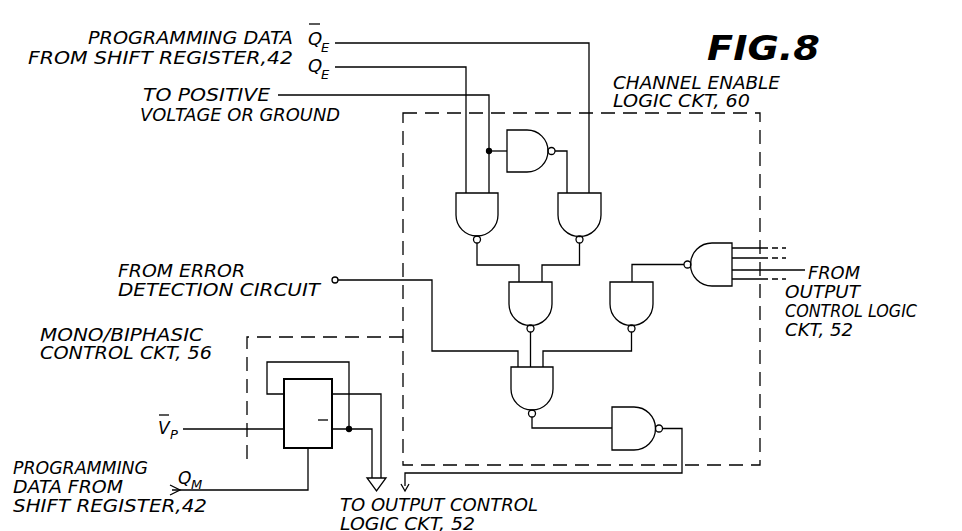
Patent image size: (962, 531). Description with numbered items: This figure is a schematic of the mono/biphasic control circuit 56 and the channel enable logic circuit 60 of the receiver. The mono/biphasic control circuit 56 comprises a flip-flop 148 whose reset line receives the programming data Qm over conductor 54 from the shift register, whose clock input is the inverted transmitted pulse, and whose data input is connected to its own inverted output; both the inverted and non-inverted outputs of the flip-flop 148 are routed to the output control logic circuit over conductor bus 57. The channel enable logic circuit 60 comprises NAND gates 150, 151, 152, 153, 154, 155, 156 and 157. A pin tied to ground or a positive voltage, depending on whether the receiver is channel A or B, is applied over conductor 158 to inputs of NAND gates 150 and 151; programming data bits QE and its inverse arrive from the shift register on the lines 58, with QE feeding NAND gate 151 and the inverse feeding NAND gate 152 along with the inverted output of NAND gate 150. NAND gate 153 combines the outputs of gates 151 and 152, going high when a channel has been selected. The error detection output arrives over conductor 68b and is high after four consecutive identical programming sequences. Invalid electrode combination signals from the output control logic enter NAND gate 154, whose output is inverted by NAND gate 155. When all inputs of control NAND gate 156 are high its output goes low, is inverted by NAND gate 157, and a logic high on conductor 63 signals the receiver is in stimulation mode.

The programming data lines from shift register 58 is at (363, 67).
The conductor 158 is at (374, 97).
The NAND gate 150 is at (518, 137).
The NAND gate 151 is at (466, 203).
The NAND gate 152 is at (590, 203).
The NAND gate 153 is at (526, 287).
The NAND gate 154 is at (713, 272).
The NAND gate 155 is at (644, 306).
The control NAND gate 156 is at (549, 385).
The NAND gate 157 is at (647, 411).
The channel enable logic circuit 60 is at (608, 90).
The mono/biphasic control circuit 56 is at (247, 354).
The flip-flop 148 is at (332, 387).
The conductor bus 57 is at (381, 457).
The conductor 63 is at (605, 473).
The conductor 68b is at (336, 276).
The conductor 54 is at (254, 490).